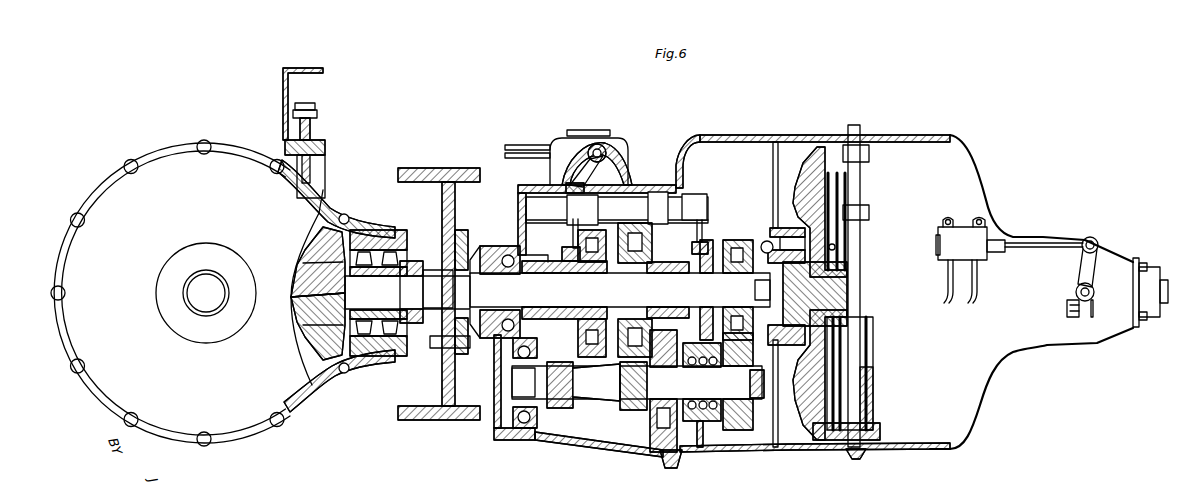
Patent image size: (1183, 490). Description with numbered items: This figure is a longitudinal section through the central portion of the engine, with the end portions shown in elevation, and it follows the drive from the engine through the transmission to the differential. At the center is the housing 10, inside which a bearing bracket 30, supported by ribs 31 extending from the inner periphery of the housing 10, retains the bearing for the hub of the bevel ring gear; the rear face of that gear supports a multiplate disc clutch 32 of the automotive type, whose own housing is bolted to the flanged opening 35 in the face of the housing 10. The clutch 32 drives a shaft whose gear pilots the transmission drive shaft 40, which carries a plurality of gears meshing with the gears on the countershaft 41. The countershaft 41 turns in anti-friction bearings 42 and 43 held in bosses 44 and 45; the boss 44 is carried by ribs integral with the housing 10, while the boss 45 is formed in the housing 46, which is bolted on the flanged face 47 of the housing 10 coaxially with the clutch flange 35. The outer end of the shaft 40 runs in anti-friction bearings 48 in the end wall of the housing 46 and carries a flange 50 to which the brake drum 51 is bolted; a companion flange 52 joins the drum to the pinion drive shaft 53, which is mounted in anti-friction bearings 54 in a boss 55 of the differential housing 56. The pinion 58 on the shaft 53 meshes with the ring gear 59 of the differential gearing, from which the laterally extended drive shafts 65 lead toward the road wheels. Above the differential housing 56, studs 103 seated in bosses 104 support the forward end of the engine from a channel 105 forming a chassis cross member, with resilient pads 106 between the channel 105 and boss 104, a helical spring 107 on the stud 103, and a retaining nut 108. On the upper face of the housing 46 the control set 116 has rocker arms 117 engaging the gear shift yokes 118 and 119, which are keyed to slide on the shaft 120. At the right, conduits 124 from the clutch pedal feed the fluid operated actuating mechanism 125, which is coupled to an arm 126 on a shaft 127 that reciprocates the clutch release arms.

The housing 10 is at (743, 135).
The bearing bracket 30 is at (768, 228).
The ribs 31 is at (773, 187).
The multiplate disc clutch 32 is at (875, 372).
The flanged opening 35 is at (858, 459).
The transmission drive shaft 40 is at (543, 285).
The countershaft 41 is at (598, 388).
The anti-friction bearing 42 is at (537, 418).
The anti-friction bearing 43 is at (720, 414).
The boss 44 is at (702, 449).
The boss 45 is at (523, 440).
The housing 46 is at (596, 450).
The flanged face 47 is at (669, 468).
The anti-friction bearings 48 is at (502, 275).
The flange 50 is at (470, 246).
The brake drum 51 is at (443, 201).
The companion flange 52 is at (441, 284).
The pinion drive shaft 53 is at (407, 292).
The anti-friction bearings 54 is at (360, 366).
The boss 55 is at (371, 230).
The differential housing 56 is at (240, 428).
The pinion 58 is at (300, 314).
The ring gear 59 is at (300, 355).
The drive shafts 65 is at (226, 277).
The studs 103 is at (320, 115).
The bosses 104 is at (326, 178).
The channel 105 is at (316, 68).
The resilient supporting pads 106 is at (327, 147).
The helical spring 107 is at (312, 128).
The nut 108 is at (318, 108).
The control set 116 is at (620, 146).
The rocker arms 117 is at (612, 172).
The gear shift yoke 118 is at (702, 228).
The gear shift yoke 119 is at (572, 235).
The shaft 120 is at (688, 207).
The conduits 124 is at (975, 283).
The fluid operated actuating mechanism 125 is at (961, 227).
The arm 126 is at (1092, 268).
The shaft 127 is at (1076, 294).